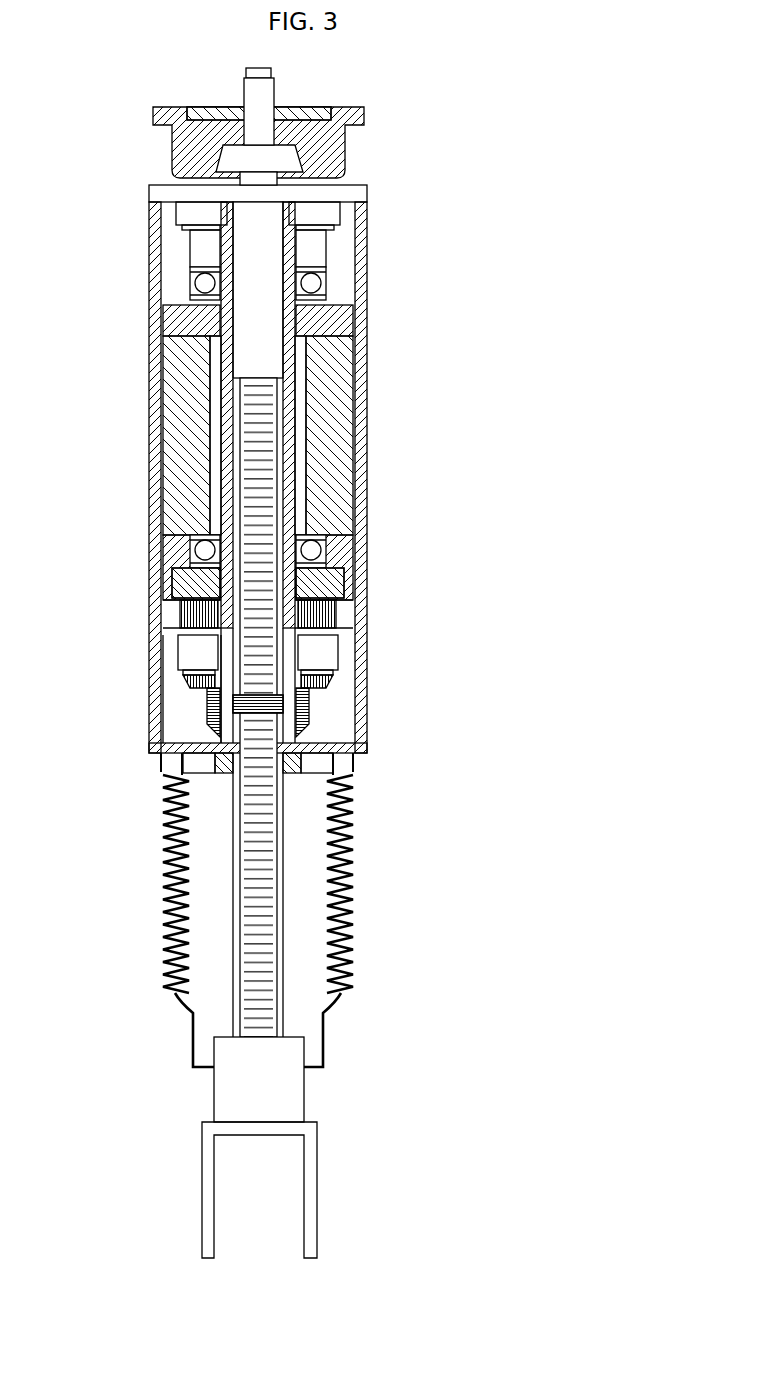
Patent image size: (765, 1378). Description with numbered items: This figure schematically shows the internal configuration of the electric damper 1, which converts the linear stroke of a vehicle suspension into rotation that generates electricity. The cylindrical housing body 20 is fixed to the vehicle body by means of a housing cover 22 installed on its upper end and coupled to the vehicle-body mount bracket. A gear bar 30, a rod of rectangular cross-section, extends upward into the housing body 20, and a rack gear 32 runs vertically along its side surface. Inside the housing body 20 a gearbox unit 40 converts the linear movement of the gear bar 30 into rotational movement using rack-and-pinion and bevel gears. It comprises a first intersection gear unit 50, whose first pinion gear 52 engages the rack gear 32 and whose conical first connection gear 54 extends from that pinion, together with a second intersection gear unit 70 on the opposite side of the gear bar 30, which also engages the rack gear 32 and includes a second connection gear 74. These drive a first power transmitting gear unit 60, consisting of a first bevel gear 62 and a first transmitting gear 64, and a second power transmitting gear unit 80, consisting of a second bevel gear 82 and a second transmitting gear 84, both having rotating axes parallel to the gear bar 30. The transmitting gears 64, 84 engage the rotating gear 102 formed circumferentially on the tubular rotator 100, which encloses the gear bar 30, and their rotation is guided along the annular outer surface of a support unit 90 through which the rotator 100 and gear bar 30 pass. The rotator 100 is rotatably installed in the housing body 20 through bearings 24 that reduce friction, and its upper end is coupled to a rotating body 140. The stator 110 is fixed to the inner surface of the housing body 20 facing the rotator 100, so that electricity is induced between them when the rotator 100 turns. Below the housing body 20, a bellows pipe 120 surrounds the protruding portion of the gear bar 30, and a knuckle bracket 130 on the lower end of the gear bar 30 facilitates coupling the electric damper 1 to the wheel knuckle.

The electric damper 1 is at (315, 472).
The housing body 20 is at (362, 427).
The housing cover 22 is at (345, 147).
The bearing 24 is at (311, 283).
The gear bar 30 is at (283, 883).
The rack gear 32 is at (262, 945).
The gearbox unit 40 is at (164, 713).
The first intersection gear unit 50 is at (200, 730).
The first pinion gear 52 is at (262, 716).
The first connection gear 54 is at (207, 703).
The first power transmitting gear unit 60 is at (127, 635).
The first bevel gear 62 is at (177, 682).
The first transmitting gear 64 is at (195, 613).
The second intersection gear unit 70 is at (391, 718).
The second connection gear 74 is at (306, 722).
The second power transmitting gear unit 80 is at (390, 648).
The second bevel gear 82 is at (318, 675).
The second transmitting gear 84 is at (322, 612).
The support unit 90 is at (333, 586).
The rotator 100 is at (300, 496).
The rotating gear 102 is at (165, 575).
The stator 110 is at (343, 372).
The bellows pipe 120 is at (355, 984).
The knuckle bracket 130 is at (317, 1183).
The rotating body 140 is at (335, 213).